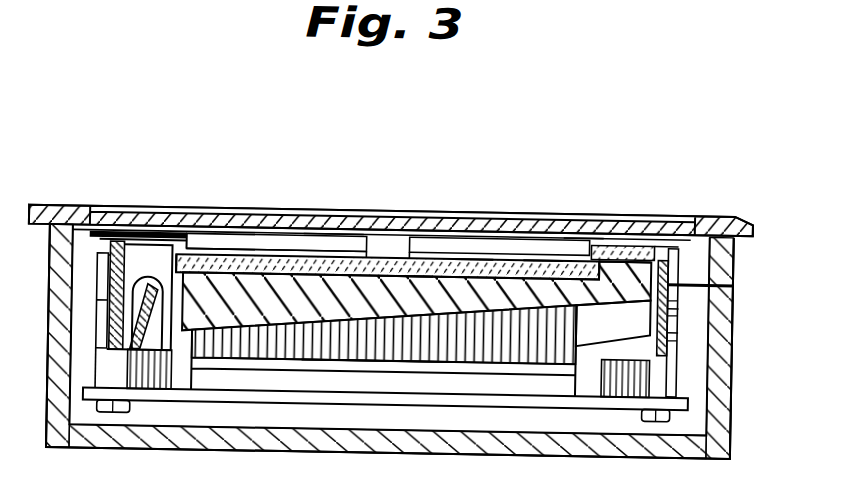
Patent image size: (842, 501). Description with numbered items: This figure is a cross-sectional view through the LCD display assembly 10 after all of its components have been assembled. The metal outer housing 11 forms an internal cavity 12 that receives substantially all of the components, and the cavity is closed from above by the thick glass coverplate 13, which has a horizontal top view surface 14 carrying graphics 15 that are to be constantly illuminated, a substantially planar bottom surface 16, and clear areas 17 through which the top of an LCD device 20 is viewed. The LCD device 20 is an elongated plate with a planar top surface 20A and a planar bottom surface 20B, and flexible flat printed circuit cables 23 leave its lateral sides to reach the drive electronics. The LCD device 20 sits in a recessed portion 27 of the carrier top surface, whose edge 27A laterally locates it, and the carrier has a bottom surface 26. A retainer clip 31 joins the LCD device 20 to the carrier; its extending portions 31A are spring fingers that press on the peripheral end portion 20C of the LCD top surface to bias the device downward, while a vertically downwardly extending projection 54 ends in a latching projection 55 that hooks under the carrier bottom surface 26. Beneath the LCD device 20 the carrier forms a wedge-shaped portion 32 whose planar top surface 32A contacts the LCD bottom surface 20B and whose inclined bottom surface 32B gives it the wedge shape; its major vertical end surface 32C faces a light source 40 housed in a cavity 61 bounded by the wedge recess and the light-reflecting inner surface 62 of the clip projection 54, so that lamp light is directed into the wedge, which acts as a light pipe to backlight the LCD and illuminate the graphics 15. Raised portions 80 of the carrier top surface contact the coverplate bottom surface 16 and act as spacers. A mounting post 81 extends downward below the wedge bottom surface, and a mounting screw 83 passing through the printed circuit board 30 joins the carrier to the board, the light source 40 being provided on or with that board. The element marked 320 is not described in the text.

The LCD display assembly 10 is at (236, 136).
The metal outer housing 11 is at (49, 393).
The internal cavity 12 is at (102, 287).
The glass coverplate 13 is at (93, 204).
The horizontal top view surface 14 is at (185, 247).
The graphics 15 is at (159, 228).
The planar bottom surface 16 is at (280, 236).
The clear areas 17 is at (390, 212).
The LCD device 20 is at (499, 262).
The LCD top surface 20A is at (467, 258).
The LCD bottom surface 20B is at (537, 256).
The peripheral end portion 20C is at (187, 259).
The flexible flat printed circuit cables 23 is at (572, 299).
The carrier bottom surface 26 is at (622, 296).
The recessed portion 27 is at (265, 296).
The recessed portion edge 27A is at (619, 288).
The printed circuit board 30 is at (242, 392).
The retainer clip 31 is at (109, 240).
The extending portions 31A is at (186, 236).
The wedge-shaped portion 32 is at (316, 323).
The wedge top surface 32A is at (409, 255).
The wedge bottom surface 32B is at (418, 325).
The major vertical end surface 32C is at (173, 268).
The light source 40 is at (137, 316).
The vertically downwardly extending projection 54 is at (102, 299).
The latching projection 55 is at (132, 340).
The cavity 61 is at (122, 239).
The light-reflecting inner surface 62 is at (104, 254).
The raised portion 80 is at (325, 228).
The mounting post 81 is at (687, 355).
The mounting screw 83 is at (642, 400).
The pin 320 is at (745, 260).